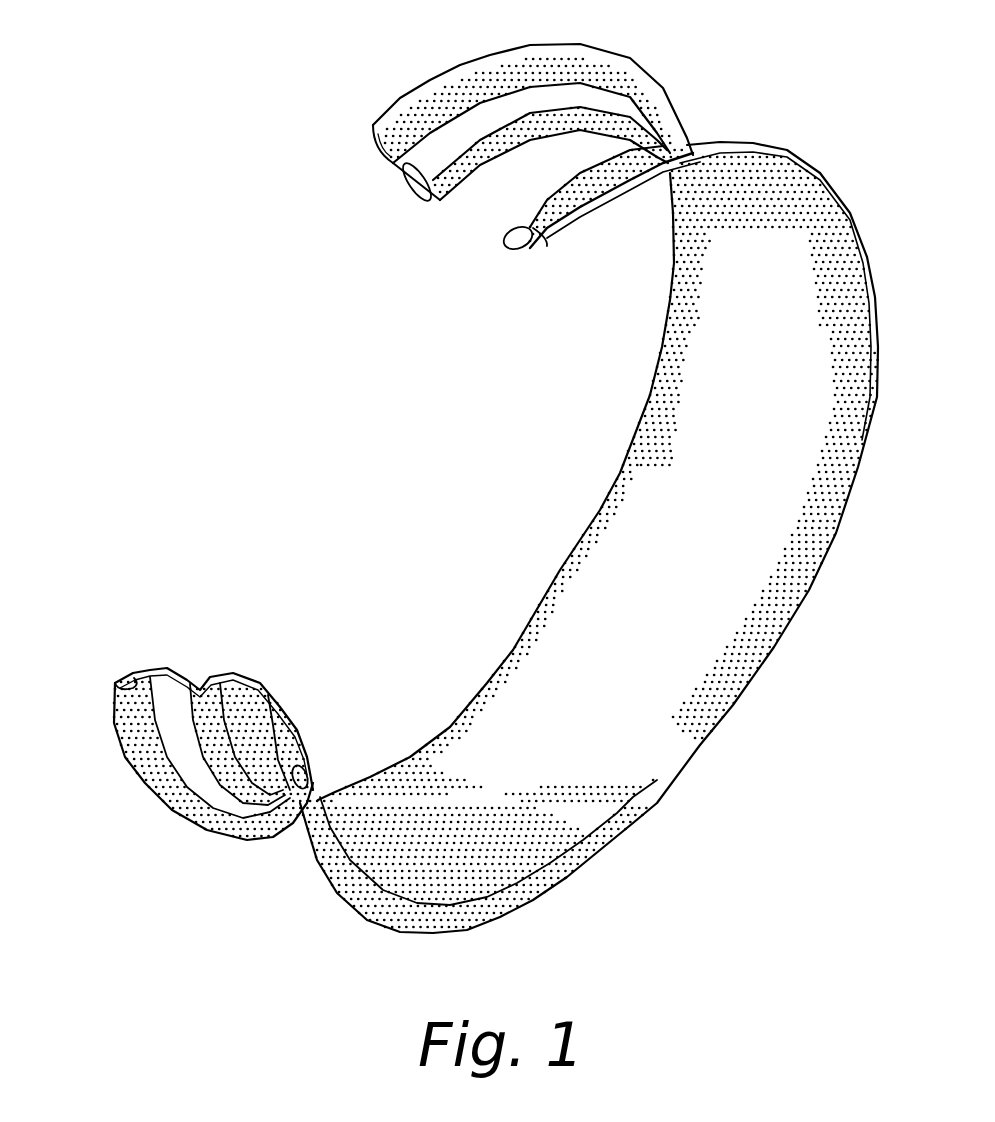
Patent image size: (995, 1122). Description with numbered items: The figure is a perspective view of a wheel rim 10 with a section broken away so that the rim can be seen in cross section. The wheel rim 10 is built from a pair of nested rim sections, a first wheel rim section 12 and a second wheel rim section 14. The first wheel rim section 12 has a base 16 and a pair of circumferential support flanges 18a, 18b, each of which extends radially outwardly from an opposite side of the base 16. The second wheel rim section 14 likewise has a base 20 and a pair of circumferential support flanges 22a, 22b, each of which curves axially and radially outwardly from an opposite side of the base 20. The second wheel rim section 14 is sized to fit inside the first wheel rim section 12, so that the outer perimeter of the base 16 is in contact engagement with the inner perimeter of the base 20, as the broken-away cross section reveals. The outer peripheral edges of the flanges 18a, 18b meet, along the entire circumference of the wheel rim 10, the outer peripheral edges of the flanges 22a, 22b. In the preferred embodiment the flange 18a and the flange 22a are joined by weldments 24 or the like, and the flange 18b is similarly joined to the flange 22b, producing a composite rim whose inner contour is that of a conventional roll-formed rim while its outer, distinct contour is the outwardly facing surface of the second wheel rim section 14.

The wheel rim 10 is at (177, 417).
The first wheel rim section 12 is at (423, 110).
The second wheel rim section 14 is at (203, 686).
The base 16 is at (480, 210).
The circumferential support flange 18a is at (403, 168).
The circumferential support flange 18b is at (506, 250).
The base 20 is at (260, 682).
The circumferential support flange 22a is at (175, 668).
The circumferential support flange 22b is at (300, 737).
The weldments 24 is at (548, 234).